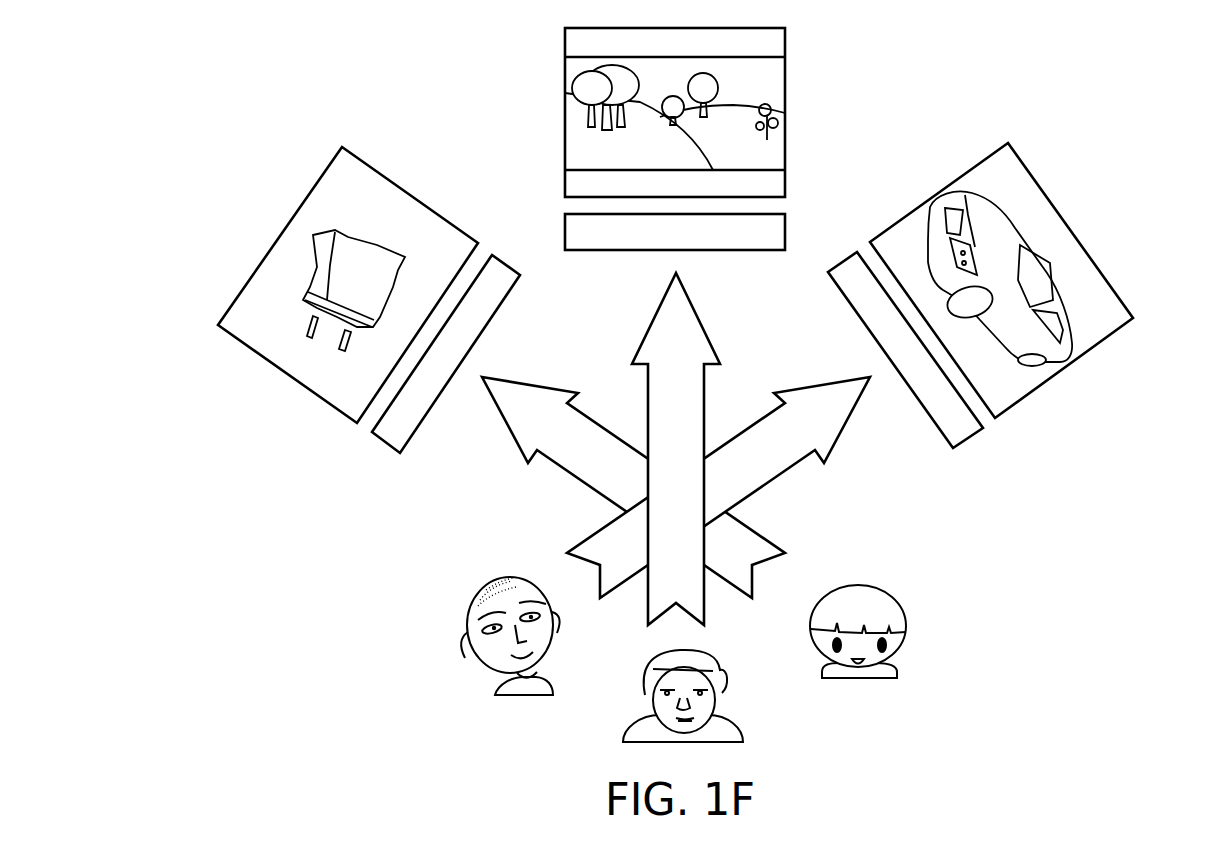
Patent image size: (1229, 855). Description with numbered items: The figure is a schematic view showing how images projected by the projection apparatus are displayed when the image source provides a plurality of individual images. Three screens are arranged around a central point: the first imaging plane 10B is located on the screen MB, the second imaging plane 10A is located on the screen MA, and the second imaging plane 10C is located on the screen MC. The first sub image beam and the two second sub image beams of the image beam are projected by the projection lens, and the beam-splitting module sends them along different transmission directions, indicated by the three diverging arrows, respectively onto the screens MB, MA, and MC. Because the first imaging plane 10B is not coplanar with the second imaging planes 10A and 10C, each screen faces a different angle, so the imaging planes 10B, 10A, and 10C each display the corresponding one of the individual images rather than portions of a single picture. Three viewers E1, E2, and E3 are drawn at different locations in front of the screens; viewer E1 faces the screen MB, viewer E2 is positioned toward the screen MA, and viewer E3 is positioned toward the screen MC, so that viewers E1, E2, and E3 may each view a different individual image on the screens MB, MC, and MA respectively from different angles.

The second imaging plane 10A is at (218, 325).
The first imaging plane 10B is at (787, 70).
The second imaging plane 10C is at (1135, 323).
The screen MA is at (382, 443).
The screen MB is at (787, 232).
The screen MC is at (972, 438).
The viewer E1 is at (743, 742).
The viewer E2 is at (493, 692).
The viewer E3 is at (897, 677).